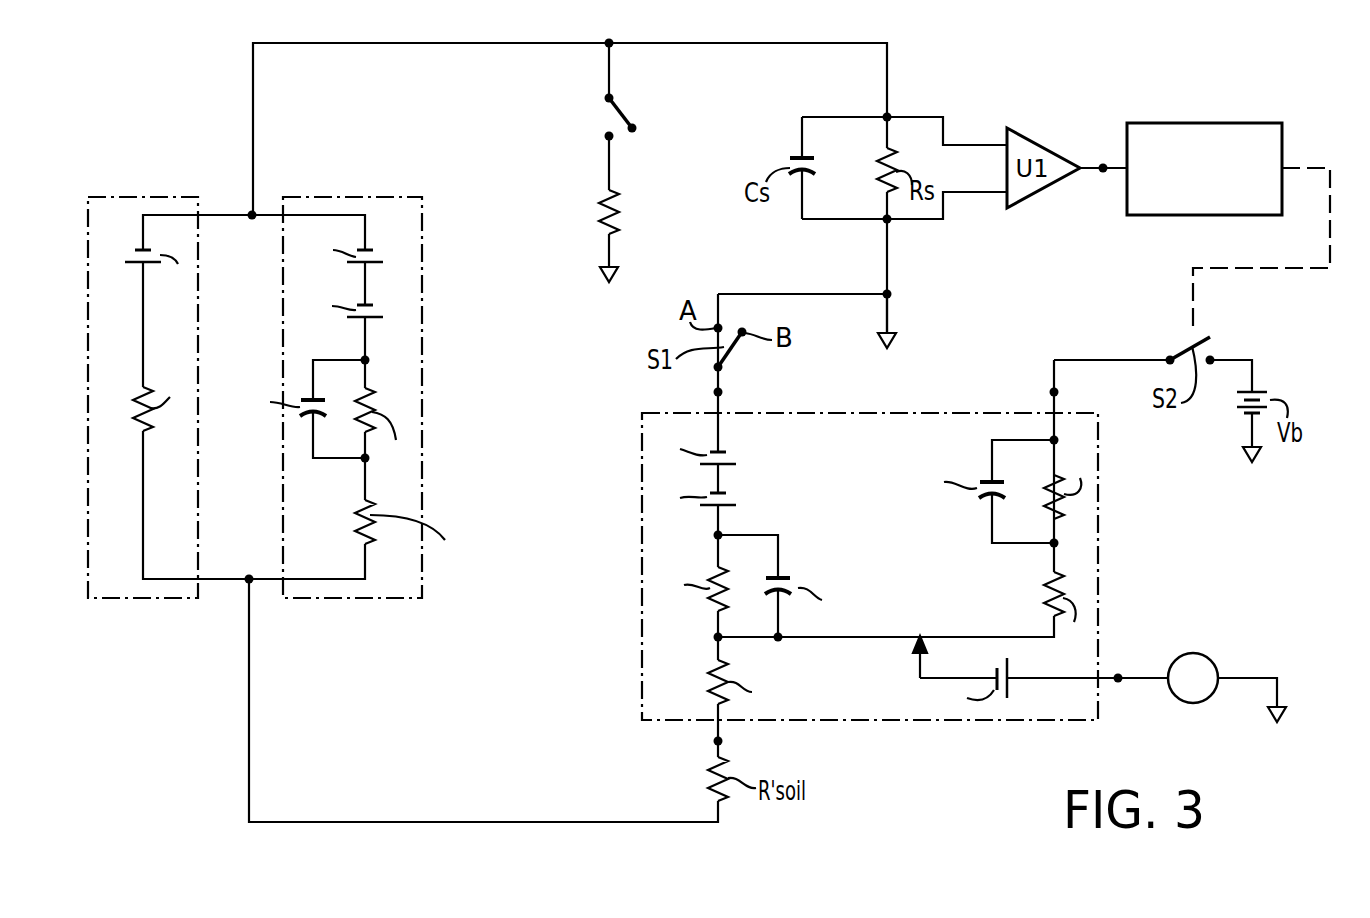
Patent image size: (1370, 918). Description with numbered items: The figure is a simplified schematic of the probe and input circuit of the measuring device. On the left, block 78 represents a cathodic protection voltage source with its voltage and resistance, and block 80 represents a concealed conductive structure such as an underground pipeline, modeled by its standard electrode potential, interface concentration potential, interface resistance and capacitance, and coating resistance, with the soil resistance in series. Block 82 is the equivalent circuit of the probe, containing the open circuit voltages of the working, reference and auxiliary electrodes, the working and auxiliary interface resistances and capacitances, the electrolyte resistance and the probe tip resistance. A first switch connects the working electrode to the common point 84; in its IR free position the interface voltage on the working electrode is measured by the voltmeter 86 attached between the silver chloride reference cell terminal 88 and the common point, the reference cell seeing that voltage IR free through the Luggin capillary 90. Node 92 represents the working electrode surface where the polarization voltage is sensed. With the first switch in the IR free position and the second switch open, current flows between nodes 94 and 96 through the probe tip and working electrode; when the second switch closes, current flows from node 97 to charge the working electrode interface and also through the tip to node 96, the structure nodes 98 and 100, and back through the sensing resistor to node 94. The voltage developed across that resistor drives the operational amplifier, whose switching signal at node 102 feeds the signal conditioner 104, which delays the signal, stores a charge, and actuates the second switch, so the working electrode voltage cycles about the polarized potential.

The cathodic protection voltage source block 78 is at (110, 598).
The concealed conductive structure block 80 is at (376, 598).
The probe equivalent circuit block 82 is at (1098, 567).
The common point 84 is at (896, 342).
The voltmeter 86 is at (1196, 654).
The silver chloride reference cell terminal 88 is at (1120, 683).
The Luggin capillary 90 is at (919, 678).
The node 92 is at (716, 637).
The node 94 is at (720, 392).
The node 96 is at (716, 741).
The node 97 is at (1050, 392).
The structure node 98 is at (248, 581).
The structure node 100 is at (250, 215).
The output node 102 is at (1103, 166).
The signal conditioner 104 is at (1218, 123).